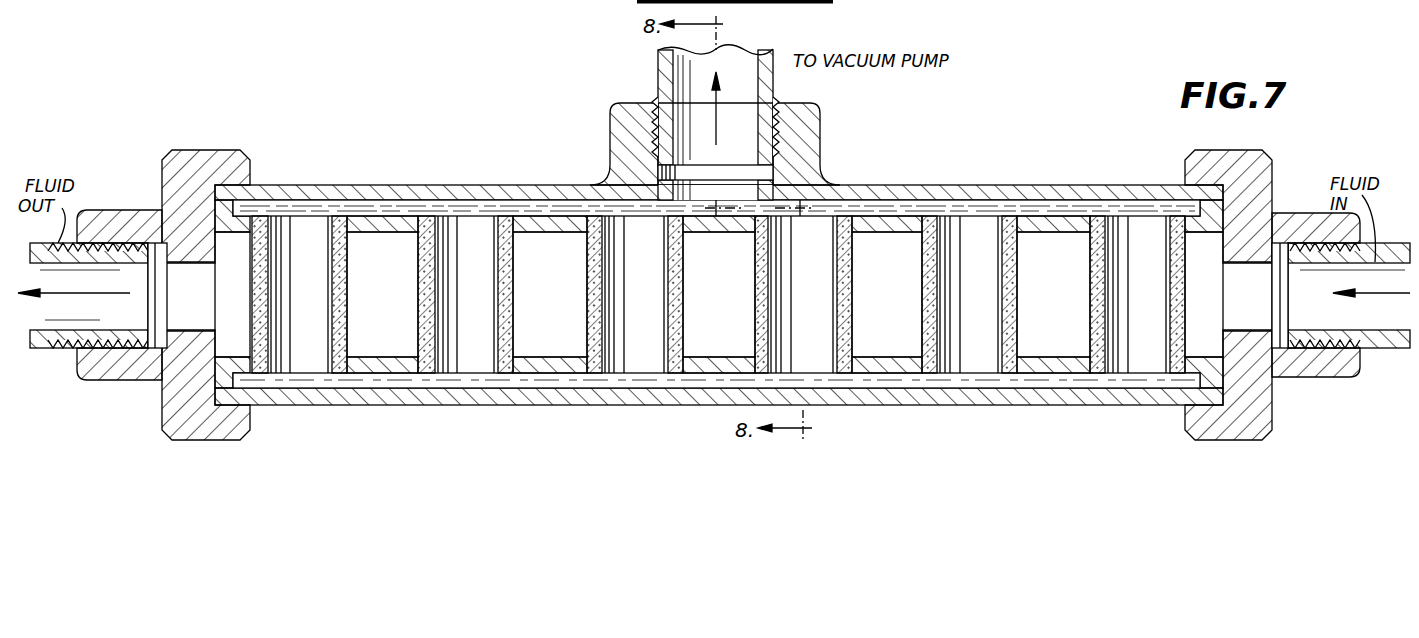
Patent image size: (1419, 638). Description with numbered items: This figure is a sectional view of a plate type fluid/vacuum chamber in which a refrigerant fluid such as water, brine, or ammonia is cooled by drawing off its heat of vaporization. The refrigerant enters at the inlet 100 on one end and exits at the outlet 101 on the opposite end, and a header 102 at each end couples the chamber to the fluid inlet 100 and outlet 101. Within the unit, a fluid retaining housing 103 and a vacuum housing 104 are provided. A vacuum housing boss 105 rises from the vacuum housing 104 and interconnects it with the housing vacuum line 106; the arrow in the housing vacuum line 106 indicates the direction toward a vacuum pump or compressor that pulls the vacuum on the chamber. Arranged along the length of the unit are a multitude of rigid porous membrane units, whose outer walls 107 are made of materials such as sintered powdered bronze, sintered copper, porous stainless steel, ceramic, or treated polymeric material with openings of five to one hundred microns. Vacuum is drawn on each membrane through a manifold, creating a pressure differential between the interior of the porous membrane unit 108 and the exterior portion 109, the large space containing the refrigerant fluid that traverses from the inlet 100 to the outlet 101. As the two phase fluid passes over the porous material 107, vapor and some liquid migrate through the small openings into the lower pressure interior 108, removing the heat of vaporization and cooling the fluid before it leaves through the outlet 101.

The inlet 100 is at (1378, 318).
The outlet 101 is at (50, 345).
The header 102 is at (213, 160).
The fluid retaining housing 103 is at (243, 212).
The vacuum housing 104 is at (378, 185).
The vacuum housing boss 105 is at (805, 128).
The housing vacuum line 106 is at (660, 61).
The rigid porous membrane 107 is at (928, 216).
The interior of porous membrane unit 108 is at (660, 310).
The exterior portion 109 is at (385, 310).